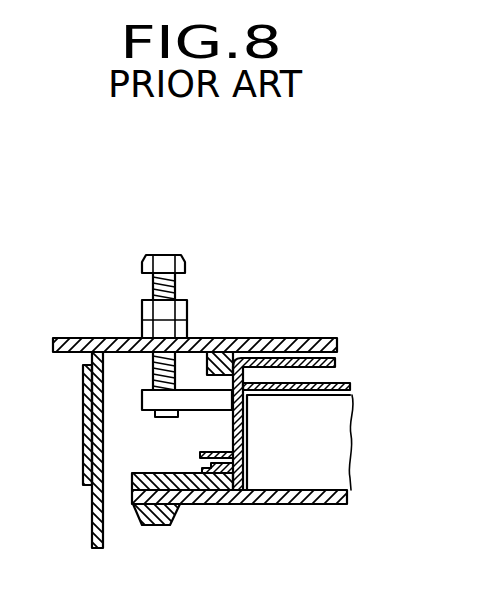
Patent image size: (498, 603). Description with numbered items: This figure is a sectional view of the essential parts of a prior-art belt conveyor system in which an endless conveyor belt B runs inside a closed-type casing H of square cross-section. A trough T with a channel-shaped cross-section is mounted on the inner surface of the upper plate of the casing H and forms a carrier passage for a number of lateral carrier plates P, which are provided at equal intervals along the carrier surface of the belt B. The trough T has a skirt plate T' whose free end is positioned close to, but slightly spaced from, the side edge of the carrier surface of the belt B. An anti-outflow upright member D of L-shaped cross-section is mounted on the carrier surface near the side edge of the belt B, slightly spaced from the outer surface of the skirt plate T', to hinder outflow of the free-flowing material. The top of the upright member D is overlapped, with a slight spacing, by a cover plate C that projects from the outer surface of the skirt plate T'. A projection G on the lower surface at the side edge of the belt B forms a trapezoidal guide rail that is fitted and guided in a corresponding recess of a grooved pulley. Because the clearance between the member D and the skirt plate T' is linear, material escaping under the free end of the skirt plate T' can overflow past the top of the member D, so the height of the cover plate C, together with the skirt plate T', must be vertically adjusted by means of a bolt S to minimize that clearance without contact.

The closed-type casing H is at (92, 352).
The bolt S is at (175, 285).
The trough T is at (284, 314).
The skirt plate T' is at (263, 463).
The lateral carrier plate P is at (330, 431).
The cover plate C is at (200, 454).
The anti-outflow upright member D is at (204, 474).
The endless conveyor belt B is at (327, 505).
The projection G is at (150, 525).